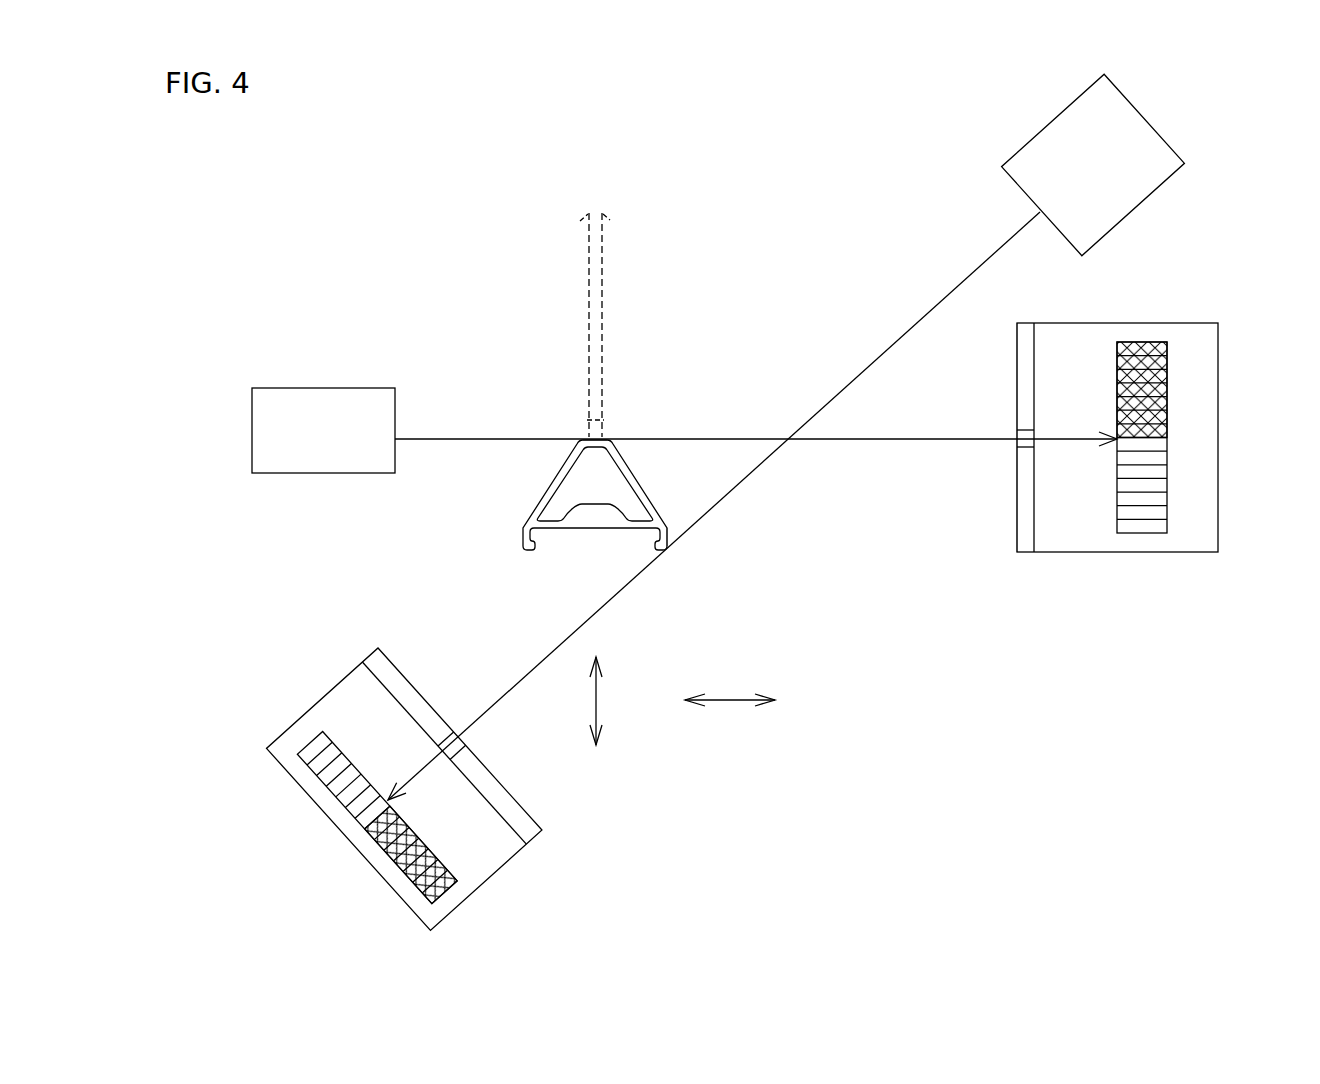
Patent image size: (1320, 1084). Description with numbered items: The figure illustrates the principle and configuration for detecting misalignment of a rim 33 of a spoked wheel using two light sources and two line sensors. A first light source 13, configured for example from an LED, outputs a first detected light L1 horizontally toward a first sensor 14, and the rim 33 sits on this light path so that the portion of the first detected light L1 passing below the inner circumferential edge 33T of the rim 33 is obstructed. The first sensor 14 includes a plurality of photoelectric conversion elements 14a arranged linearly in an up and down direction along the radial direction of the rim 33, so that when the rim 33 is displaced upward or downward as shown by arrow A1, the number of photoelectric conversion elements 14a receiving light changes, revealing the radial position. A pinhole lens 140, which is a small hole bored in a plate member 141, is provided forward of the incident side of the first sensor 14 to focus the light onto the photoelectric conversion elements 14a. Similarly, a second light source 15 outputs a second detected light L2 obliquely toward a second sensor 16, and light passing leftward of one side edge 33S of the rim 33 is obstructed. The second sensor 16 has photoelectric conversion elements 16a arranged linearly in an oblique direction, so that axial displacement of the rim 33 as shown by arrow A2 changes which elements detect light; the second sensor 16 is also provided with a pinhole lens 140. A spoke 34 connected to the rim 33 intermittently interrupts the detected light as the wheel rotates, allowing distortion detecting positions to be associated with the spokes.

The first light source 13 is at (323, 388).
The first detected light L1 is at (470, 439).
The spoke 34 is at (603, 285).
The rim 33 is at (645, 475).
The inner circumferential edge 33T is at (600, 438).
The one side edge 33S is at (670, 552).
The second light source 15 is at (1168, 177).
The second detected light L2 is at (943, 302).
The first sensor 14 is at (1185, 552).
The photoelectric conversion elements 14a is at (1163, 340).
The pinhole lens 140 is at (1019, 430).
The plate member 141 is at (1024, 528).
The second sensor 16 is at (500, 865).
The photoelectric conversion elements 16a is at (337, 743).
The arrow A1 is at (596, 700).
The arrow A2 is at (730, 705).